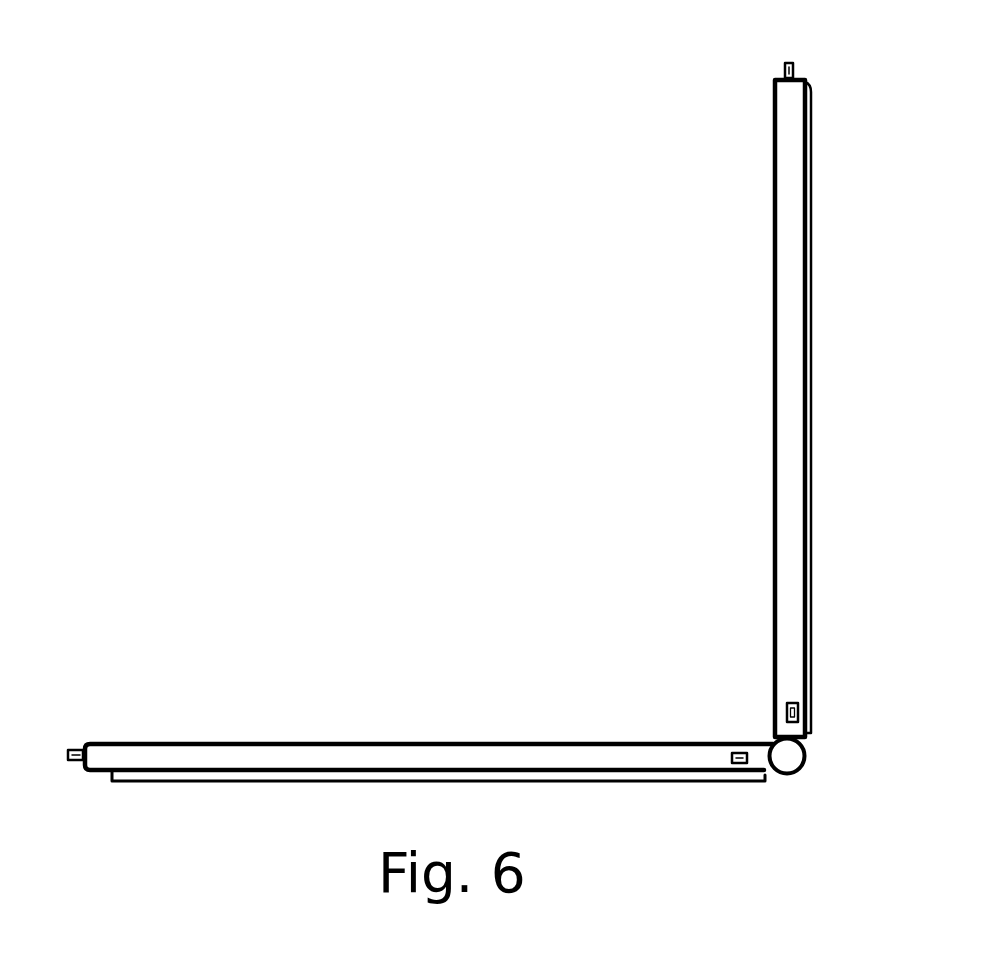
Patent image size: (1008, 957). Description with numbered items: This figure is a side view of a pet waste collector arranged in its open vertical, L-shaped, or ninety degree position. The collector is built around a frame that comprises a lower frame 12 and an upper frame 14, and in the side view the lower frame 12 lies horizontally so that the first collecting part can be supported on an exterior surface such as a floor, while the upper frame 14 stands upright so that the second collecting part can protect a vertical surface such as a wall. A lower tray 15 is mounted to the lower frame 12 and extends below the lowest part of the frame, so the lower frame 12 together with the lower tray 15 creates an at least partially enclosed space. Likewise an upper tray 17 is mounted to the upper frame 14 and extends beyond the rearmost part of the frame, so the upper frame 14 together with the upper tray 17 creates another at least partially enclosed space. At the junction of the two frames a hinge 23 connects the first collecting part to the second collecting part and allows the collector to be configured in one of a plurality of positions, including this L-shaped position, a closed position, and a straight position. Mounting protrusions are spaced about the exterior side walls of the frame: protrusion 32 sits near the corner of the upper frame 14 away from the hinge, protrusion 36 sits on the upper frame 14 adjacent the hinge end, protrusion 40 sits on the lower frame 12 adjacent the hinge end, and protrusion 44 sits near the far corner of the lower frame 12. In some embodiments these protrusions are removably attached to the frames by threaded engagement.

The lower frame 12 is at (628, 761).
The upper frame 14 is at (786, 377).
The lower tray 15 is at (190, 777).
The upper tray 17 is at (813, 297).
The hinge 23 is at (789, 757).
The mounting protrusion 32 is at (795, 68).
The mounting protrusion 36 is at (800, 706).
The mounting protrusion 40 is at (729, 765).
The mounting protrusion 44 is at (66, 756).